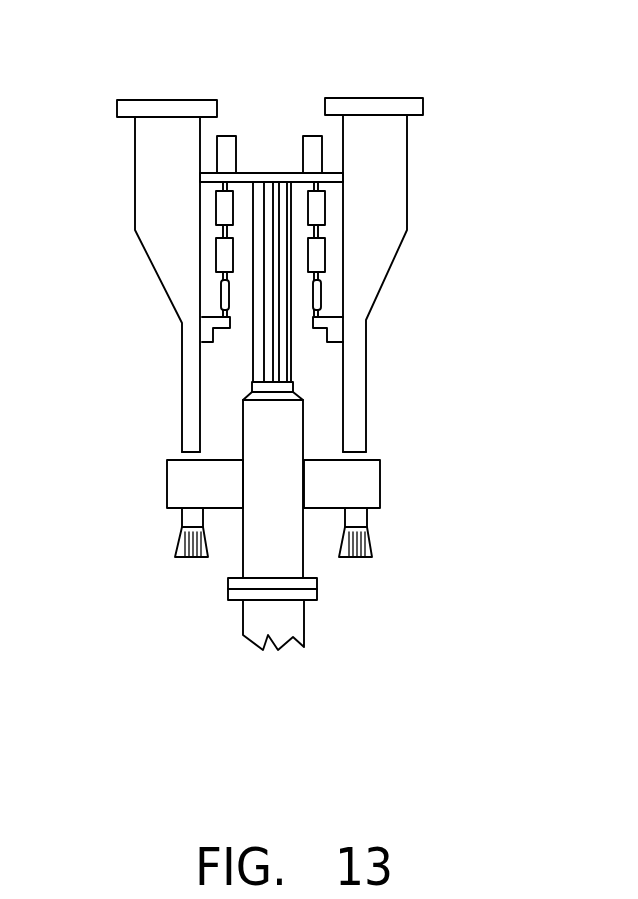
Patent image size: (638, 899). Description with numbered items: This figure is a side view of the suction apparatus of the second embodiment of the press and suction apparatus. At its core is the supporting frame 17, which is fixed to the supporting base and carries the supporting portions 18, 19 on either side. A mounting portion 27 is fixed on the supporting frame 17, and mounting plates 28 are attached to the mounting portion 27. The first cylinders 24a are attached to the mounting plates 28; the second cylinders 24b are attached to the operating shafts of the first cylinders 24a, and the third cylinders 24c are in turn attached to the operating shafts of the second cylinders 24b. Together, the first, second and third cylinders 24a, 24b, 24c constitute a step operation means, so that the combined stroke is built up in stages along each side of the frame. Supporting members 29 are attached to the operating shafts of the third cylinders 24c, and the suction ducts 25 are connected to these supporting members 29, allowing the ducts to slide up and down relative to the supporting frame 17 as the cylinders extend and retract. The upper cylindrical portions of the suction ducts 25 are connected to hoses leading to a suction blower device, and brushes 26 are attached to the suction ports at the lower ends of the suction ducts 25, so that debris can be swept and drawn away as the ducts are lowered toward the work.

The supporting frame 17 is at (246, 422).
The supporting portion 18 is at (173, 482).
The supporting portion 19 is at (362, 477).
The first cylinders 24a is at (313, 145).
The second cylinders 24b is at (223, 210).
The third cylinders 24c is at (223, 258).
The suction ducts 25 is at (157, 122).
The brushes 26 is at (182, 557).
The mounting portion 27 is at (272, 358).
The mounting plates 28 is at (338, 175).
The supporting members 29 is at (212, 328).